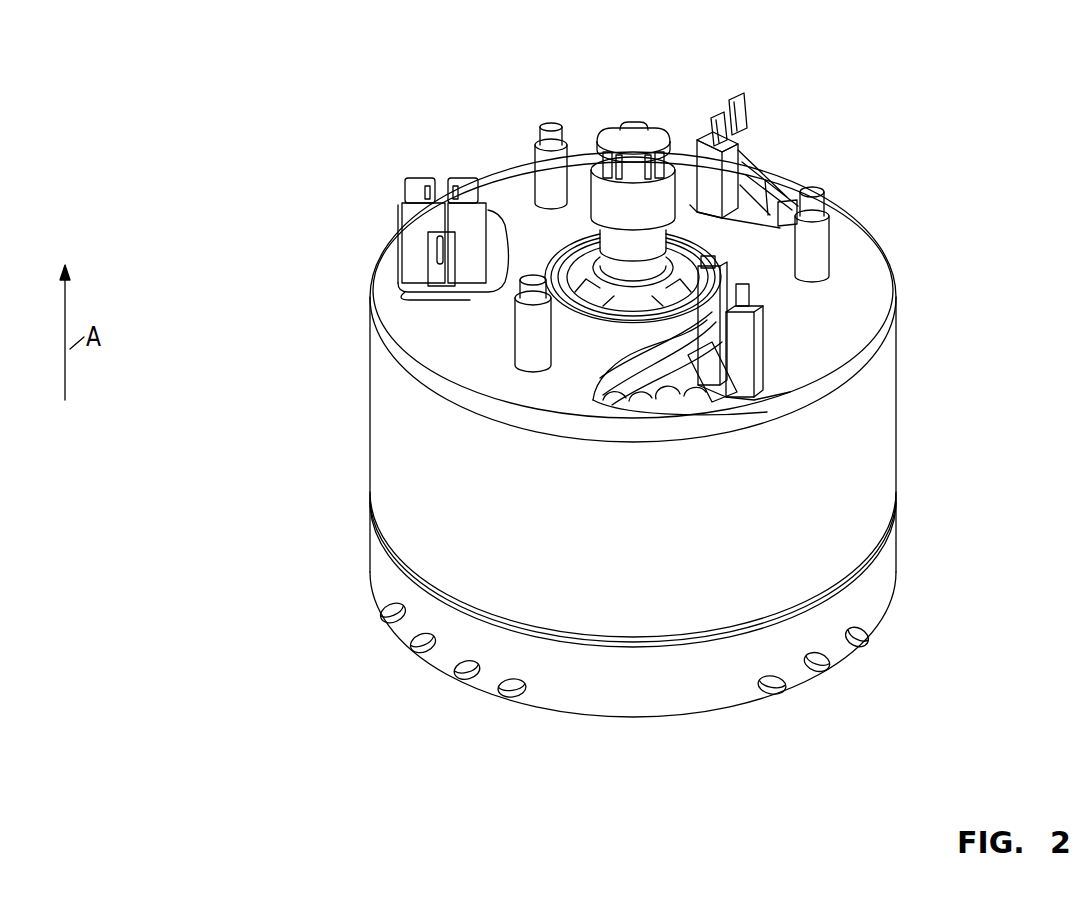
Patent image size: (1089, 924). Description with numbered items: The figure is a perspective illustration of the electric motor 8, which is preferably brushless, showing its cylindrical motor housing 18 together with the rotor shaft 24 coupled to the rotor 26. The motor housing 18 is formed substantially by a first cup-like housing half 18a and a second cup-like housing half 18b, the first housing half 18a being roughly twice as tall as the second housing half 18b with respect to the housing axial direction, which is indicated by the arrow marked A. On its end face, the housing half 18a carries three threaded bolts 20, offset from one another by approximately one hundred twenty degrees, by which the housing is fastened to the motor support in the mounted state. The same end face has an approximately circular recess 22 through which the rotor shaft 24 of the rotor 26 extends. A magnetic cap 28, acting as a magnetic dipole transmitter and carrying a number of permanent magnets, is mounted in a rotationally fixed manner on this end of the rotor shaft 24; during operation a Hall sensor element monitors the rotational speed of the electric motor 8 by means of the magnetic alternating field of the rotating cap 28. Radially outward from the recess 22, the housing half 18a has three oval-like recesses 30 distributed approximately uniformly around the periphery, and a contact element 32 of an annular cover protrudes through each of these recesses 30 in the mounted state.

The electric motor 8 is at (951, 189).
The motor housing 18 is at (713, 434).
The first cup-like housing half 18a is at (877, 407).
The second cup-like housing half 18b is at (679, 603).
The threaded bolts 20 is at (567, 178).
The circular recess 22 is at (579, 321).
The rotor shaft 24 is at (350, 129).
The rotor 26 is at (612, 243).
The magnetic cap 28 is at (640, 130).
The oval-like recesses 30 is at (413, 290).
The contact element 32 is at (412, 215).